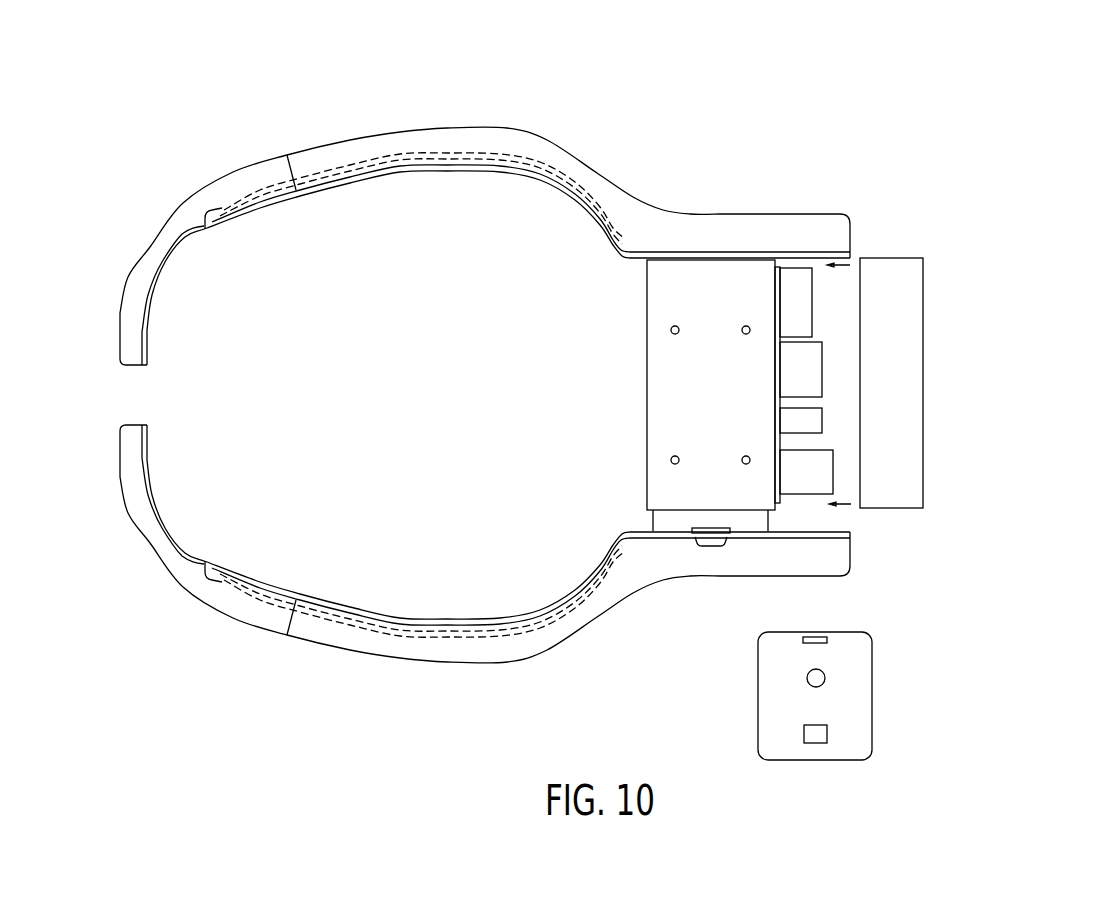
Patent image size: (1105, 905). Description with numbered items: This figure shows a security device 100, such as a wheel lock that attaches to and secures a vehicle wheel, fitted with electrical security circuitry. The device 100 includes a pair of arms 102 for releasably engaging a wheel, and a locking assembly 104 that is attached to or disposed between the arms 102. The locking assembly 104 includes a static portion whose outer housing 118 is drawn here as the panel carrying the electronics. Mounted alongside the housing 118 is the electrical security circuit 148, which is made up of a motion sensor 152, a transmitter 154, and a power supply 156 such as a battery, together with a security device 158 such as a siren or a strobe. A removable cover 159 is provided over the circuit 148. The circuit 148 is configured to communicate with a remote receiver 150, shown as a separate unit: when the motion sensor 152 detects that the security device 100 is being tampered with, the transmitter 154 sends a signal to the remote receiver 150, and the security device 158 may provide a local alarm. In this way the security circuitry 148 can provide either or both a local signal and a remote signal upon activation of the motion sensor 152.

The device 100 is at (549, 371).
The arms 102 is at (397, 150).
The locking assembly 104 is at (719, 365).
The housing 118 is at (675, 305).
The electrical security circuit 148 is at (967, 401).
The remote receiver 150 is at (888, 683).
The motion sensor 152 is at (792, 472).
The transmitter 154 is at (792, 367).
The power supply 156 is at (792, 423).
The security device 158 is at (797, 285).
The removable cover 159 is at (903, 307).